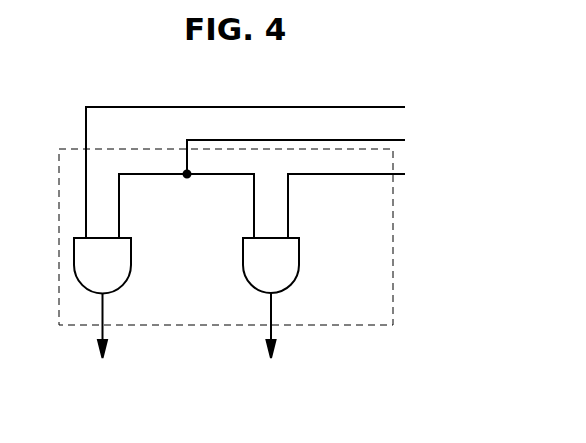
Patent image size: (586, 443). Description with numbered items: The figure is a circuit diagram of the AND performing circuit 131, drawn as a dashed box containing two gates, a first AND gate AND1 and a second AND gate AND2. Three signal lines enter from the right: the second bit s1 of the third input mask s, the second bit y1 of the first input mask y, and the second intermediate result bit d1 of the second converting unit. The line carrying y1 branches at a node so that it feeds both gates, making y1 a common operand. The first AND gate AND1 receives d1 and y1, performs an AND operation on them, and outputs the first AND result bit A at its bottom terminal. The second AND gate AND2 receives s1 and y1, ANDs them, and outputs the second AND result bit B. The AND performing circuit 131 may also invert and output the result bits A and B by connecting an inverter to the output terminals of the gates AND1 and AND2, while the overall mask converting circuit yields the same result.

The AND performing circuit 131 is at (393, 237).
The second bit of the third input mask s s1 is at (257, 166).
The second bit of the first input mask y y1 is at (307, 153).
The second intermediate result bit d1 is at (275, 200).
The first AND gate AND1 is at (299, 258).
The second AND gate AND2 is at (131, 258).
The first AND result bit A is at (270, 342).
The second AND result bit B is at (100, 342).